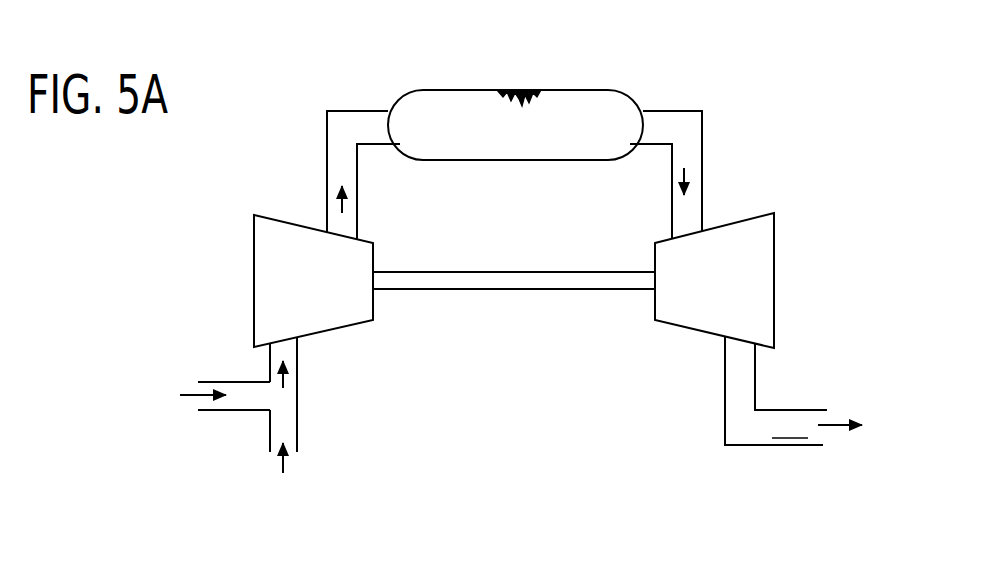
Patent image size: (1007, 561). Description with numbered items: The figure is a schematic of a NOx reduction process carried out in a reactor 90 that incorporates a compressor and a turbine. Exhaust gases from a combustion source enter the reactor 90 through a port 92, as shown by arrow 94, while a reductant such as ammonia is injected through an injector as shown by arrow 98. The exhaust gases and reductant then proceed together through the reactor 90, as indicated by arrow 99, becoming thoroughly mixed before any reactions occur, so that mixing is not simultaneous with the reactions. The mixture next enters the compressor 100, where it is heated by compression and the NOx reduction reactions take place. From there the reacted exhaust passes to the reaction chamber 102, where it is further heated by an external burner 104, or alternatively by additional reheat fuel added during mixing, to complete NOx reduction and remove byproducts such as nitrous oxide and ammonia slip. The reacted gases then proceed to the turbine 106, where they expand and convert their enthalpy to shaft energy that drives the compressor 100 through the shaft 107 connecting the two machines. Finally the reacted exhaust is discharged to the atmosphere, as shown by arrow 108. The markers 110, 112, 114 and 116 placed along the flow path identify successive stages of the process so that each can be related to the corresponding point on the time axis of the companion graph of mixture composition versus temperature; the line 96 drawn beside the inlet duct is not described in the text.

The reactor 90 is at (285, 143).
The port 92 is at (207, 402).
The arrow 94 is at (187, 390).
The compressor inlet duct wall 96 is at (298, 413).
The arrow 98 is at (285, 463).
The arrow 99 is at (285, 380).
The compressor 100 is at (262, 254).
The reaction chamber 102 is at (438, 100).
The external burner 104 is at (519, 89).
The turbine 106 is at (765, 247).
The shaft 107 is at (518, 293).
The arrow 108 is at (845, 420).
The reference number 110 is at (290, 357).
The reference number 112 is at (353, 193).
The reference number 114 is at (607, 100).
The reference number 116 is at (776, 390).